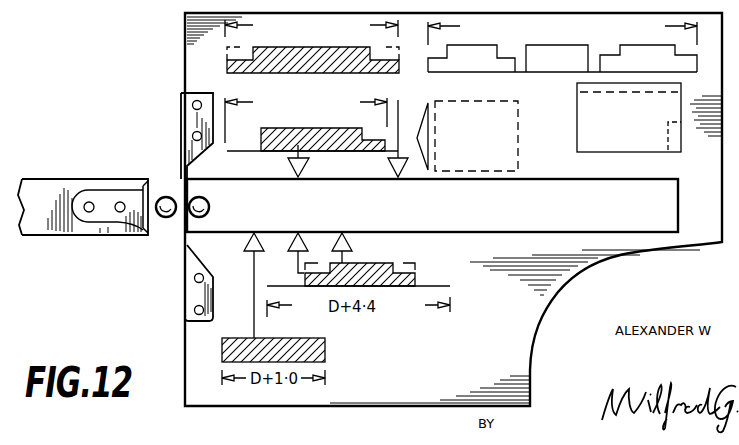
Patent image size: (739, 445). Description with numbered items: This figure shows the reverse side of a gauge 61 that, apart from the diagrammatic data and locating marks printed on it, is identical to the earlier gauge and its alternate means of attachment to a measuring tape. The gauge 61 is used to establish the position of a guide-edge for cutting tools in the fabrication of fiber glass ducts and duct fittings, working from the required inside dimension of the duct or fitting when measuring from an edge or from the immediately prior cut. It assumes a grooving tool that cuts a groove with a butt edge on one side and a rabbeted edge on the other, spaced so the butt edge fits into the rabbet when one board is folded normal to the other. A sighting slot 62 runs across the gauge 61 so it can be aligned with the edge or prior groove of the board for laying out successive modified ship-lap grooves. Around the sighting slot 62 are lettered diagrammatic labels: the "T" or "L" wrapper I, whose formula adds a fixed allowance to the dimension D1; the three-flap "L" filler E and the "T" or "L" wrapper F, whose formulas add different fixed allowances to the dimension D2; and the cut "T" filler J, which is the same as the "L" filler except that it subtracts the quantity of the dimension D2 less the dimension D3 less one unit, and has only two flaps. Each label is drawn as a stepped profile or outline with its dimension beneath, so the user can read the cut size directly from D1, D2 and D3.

The sighting slot 62 is at (510, 214).
The gauge 61 is at (586, 270).
The "T" or "L" wrapper label I is at (312, 45).
The "L" filler label E is at (311, 122).
The "T" or "L" wrapper label F is at (562, 44).
The cut "T" filler label J is at (467, 136).
The first duct dimension D1 is at (629, 130).
The second duct dimension D2 is at (614, 112).
The third duct dimension D3 is at (686, 131).